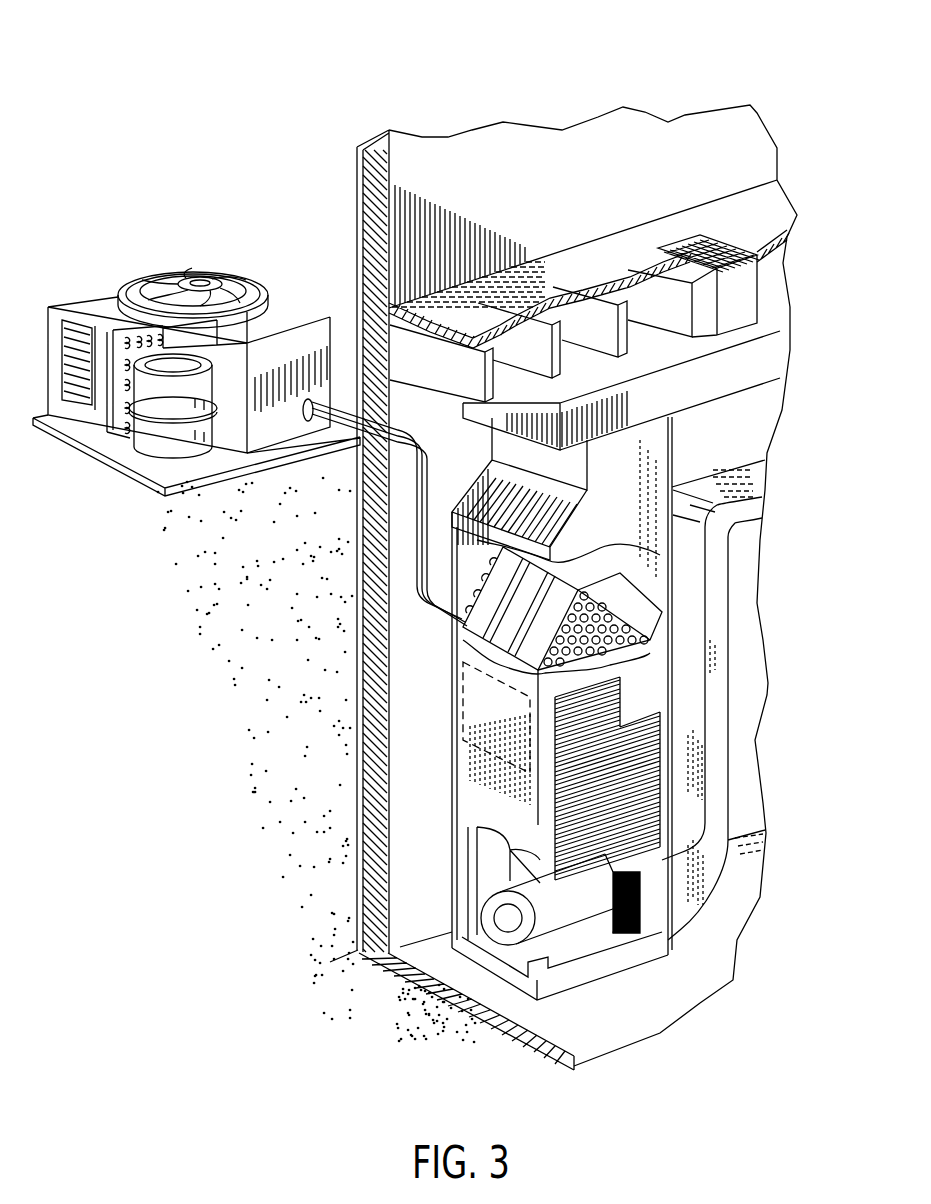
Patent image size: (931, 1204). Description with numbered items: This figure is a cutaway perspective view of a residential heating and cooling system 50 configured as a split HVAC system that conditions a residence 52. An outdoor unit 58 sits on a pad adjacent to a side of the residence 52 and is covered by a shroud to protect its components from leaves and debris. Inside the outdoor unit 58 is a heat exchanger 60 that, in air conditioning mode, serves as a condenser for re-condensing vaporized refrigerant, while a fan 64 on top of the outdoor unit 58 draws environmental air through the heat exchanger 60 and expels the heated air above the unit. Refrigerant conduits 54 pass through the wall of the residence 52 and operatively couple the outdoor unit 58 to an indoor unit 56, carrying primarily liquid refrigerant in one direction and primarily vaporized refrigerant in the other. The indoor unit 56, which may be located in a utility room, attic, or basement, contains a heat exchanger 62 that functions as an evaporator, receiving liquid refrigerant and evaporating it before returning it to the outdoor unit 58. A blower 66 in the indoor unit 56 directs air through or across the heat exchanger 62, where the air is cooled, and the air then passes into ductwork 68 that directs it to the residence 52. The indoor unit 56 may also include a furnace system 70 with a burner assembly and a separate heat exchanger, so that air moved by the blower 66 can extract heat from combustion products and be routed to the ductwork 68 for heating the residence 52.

The residential heating and cooling system 50 is at (190, 102).
The residence 52 is at (492, 152).
The refrigerant conduits 54 is at (417, 517).
The indoor unit 56 is at (427, 752).
The outdoor unit 58 is at (153, 264).
The heat exchanger 60 is at (127, 338).
The heat exchanger 62 is at (512, 637).
The fan 64 is at (210, 284).
The blower 66 is at (505, 945).
The ductwork 68 is at (713, 372).
The furnace system 70 is at (463, 725).